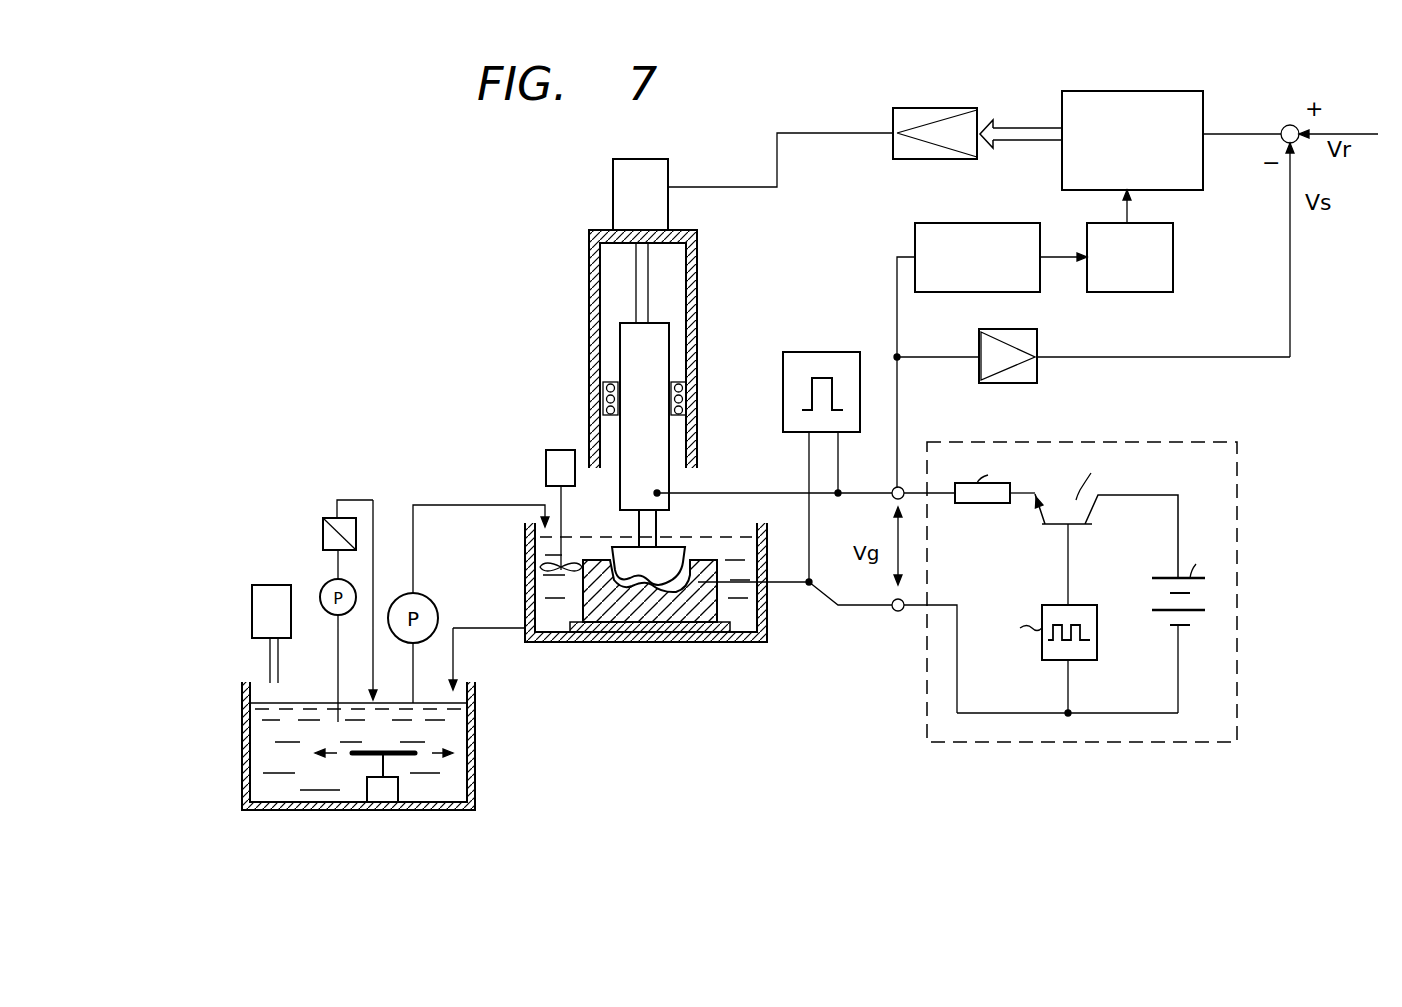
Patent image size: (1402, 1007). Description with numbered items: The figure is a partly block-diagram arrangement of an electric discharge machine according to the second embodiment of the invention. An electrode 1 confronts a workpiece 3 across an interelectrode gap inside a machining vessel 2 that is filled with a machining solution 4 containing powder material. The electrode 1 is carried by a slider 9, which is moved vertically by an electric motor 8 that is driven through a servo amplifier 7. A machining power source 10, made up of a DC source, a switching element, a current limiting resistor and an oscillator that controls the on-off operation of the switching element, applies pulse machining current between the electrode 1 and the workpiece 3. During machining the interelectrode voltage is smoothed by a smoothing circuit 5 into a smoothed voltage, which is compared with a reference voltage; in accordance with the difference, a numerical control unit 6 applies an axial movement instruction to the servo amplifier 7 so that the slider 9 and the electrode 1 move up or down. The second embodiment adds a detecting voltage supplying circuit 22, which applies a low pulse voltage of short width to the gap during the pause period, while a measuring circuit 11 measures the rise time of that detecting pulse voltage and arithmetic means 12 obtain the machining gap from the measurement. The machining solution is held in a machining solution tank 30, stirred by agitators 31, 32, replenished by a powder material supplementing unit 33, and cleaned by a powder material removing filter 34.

The electrode 1 is at (670, 556).
The machining vessel 2 is at (768, 637).
The workpiece 3 is at (636, 610).
The machining solution containing powder material 4 is at (557, 620).
The smoothing circuit 5 is at (1036, 331).
The numeral control unit 6 is at (1157, 91).
The servo amplifier 7 is at (934, 108).
The electric motor 8 is at (641, 159).
The slider 9 is at (662, 351).
The machining power source 10 is at (1238, 703).
The measuring circuit 11 is at (1000, 223).
The arithmetic means 12 is at (1142, 223).
The detecting voltage supplying circuit 22 is at (840, 352).
The machining solution tank 30 is at (475, 768).
The agitator 31 is at (551, 450).
The agitator 32 is at (398, 790).
The powder material supplementing unit 33 is at (252, 595).
The powder material removing filter 34 is at (331, 518).